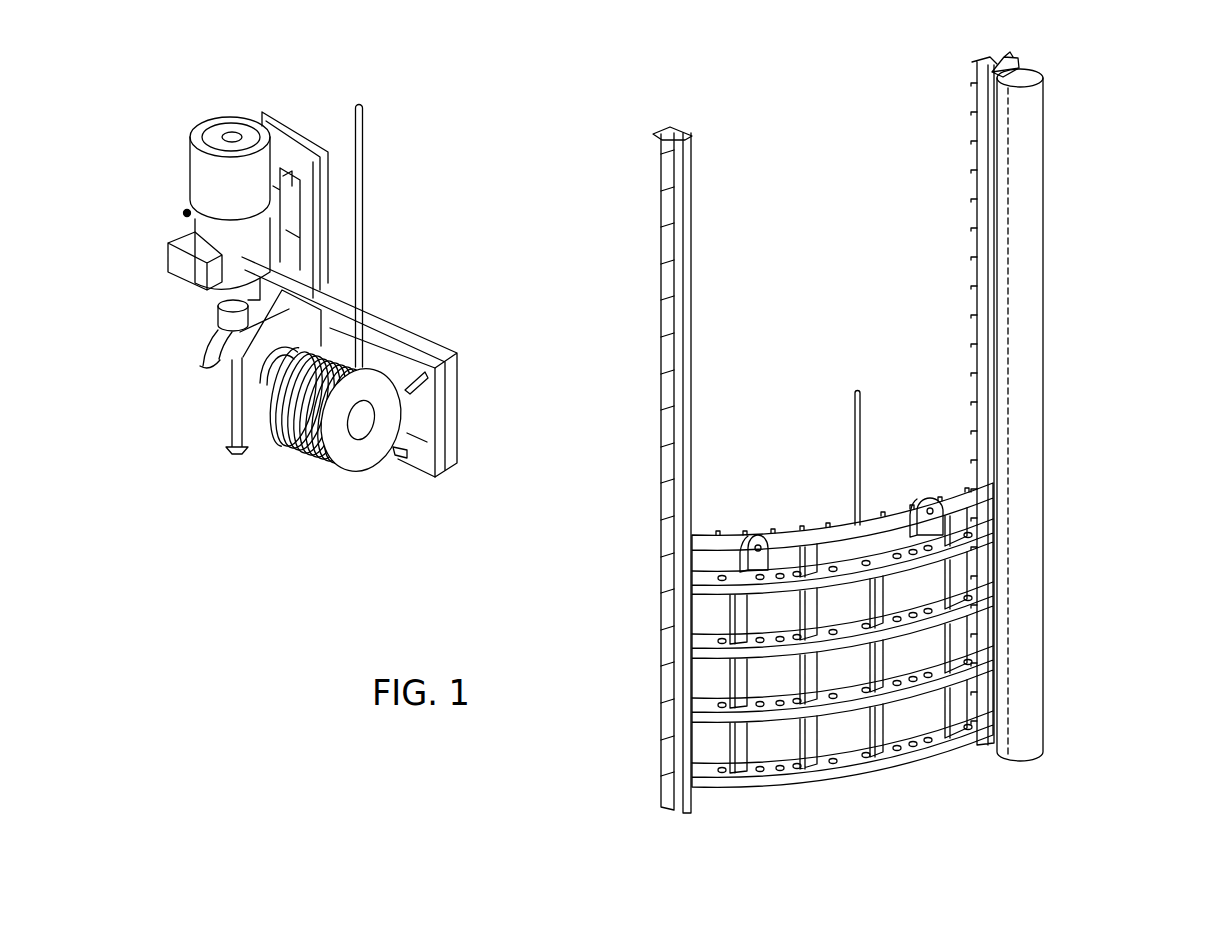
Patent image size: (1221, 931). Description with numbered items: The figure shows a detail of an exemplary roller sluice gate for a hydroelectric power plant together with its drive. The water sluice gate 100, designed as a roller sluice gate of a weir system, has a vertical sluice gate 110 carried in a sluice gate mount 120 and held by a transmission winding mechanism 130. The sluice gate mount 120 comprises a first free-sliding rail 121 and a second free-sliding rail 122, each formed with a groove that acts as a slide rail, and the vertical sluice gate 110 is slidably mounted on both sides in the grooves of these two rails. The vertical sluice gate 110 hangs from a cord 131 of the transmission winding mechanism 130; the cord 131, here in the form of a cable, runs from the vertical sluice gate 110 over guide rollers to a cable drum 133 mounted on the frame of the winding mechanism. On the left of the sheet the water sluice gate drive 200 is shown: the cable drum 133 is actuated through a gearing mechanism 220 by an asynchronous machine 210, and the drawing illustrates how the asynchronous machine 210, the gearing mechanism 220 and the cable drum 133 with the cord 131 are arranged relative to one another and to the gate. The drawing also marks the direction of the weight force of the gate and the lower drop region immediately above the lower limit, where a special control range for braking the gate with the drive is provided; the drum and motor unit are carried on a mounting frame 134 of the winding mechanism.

The water sluice gate 100 is at (1143, 138).
The vertical sluice gate 110 is at (920, 585).
The sluice gate mount 120 is at (998, 210).
The first free-sliding rail 121 is at (1018, 58).
The second free-sliding rail 122 is at (690, 131).
The transmission winding mechanism 130 is at (404, 191).
The cord 131 is at (365, 240).
The cable drum 133 is at (305, 448).
The mounting frame 134 is at (282, 125).
The water sluice gate drive 200 is at (146, 321).
The asynchronous machine 210 is at (185, 179).
The gearing mechanism 220 is at (212, 345).